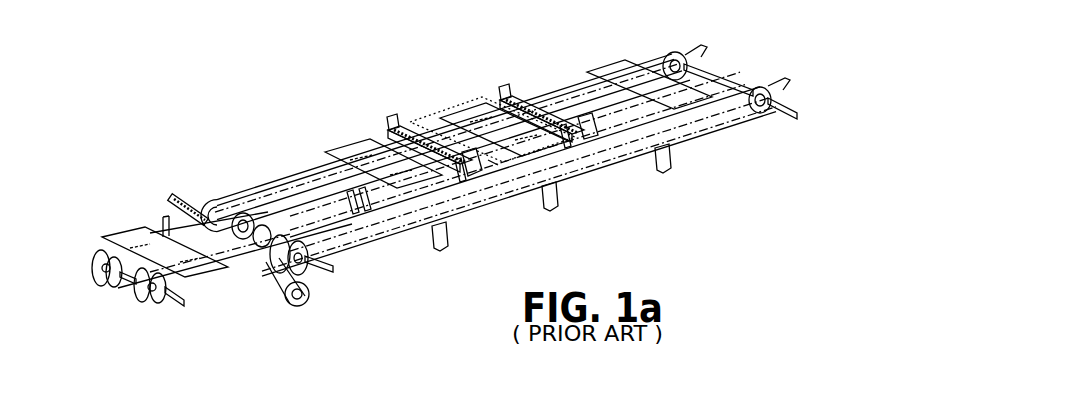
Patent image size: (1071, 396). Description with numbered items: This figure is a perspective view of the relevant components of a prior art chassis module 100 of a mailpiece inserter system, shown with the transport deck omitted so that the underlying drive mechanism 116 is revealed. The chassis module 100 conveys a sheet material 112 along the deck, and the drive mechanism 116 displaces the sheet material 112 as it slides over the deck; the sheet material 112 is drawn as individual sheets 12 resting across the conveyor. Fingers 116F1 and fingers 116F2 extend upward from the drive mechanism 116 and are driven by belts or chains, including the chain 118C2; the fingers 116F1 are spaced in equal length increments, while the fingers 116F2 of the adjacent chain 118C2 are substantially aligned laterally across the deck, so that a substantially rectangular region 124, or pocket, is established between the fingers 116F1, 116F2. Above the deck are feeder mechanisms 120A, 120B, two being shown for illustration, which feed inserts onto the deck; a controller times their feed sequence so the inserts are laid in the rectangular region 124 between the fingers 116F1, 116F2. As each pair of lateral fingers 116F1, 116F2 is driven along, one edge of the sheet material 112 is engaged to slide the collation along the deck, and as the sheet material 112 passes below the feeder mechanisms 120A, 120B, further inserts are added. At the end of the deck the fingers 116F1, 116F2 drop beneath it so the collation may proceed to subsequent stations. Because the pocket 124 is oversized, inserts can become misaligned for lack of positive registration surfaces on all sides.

The chassis module 100 is at (252, 144).
The board 12 is at (342, 143).
The sheet material 112 is at (631, 78).
The drive mechanism 116 is at (252, 298).
The fingers 116F1 is at (466, 176).
The fingers 116F2 is at (388, 120).
The chain 118C2 is at (557, 85).
The feeder mechanism 120A is at (404, 128).
The feeder mechanism 120B is at (518, 94).
The rectangular region 124 is at (500, 168).